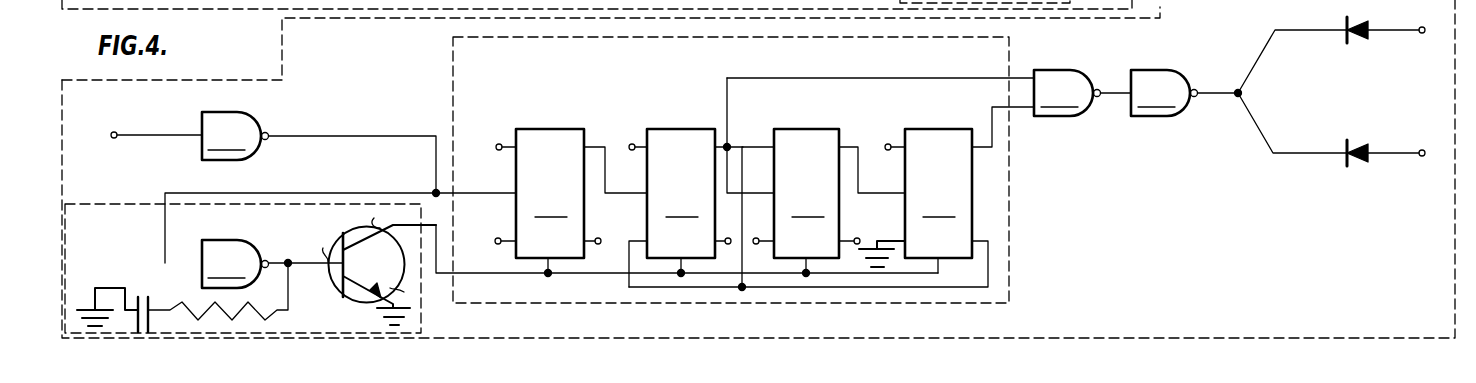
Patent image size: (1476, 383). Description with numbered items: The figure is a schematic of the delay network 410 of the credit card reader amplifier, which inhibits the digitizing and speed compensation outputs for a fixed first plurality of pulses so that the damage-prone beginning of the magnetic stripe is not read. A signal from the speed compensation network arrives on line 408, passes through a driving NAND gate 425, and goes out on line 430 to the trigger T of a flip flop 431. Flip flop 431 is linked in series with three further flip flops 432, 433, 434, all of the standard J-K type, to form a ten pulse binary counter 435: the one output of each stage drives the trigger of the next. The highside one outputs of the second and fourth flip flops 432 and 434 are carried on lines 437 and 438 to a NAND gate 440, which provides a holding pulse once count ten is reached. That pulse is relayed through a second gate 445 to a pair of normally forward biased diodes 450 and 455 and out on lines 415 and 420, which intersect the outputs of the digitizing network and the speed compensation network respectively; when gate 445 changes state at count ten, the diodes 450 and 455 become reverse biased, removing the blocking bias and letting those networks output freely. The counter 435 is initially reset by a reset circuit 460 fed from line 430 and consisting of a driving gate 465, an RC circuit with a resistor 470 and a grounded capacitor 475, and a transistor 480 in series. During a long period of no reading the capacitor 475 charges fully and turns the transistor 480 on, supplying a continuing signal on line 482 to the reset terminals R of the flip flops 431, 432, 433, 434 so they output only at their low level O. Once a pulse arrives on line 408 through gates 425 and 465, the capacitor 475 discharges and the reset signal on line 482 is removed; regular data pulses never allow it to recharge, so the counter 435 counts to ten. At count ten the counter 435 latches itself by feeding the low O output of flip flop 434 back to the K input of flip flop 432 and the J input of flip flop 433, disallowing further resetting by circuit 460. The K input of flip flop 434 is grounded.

The line 408 is at (163, 137).
The delay network 410 is at (282, 50).
The line 415 is at (1425, 34).
The line 420 is at (1425, 158).
The driving NAND gate 425 is at (235, 136).
The line 430 is at (436, 165).
The flip flop 431 is at (571, 203).
The flip flop 432 is at (701, 182).
The flip flop 433 is at (822, 210).
The flip flop 434 is at (808, 208).
The ten pulse binary counter 435 is at (453, 38).
The line 437 is at (1021, 76).
The line 438 is at (1022, 110).
The NAND gate 440 is at (1067, 93).
The second gate 445 is at (1149, 93).
The diode 450 is at (1347, 42).
The diode 455 is at (1351, 164).
The reset circuit 460 is at (112, 200).
The driving gate 465 is at (272, 264).
The resistor 470 is at (192, 303).
The grounded capacitor 475 is at (142, 294).
The transistor 480 is at (366, 302).
The line 482 is at (436, 275).